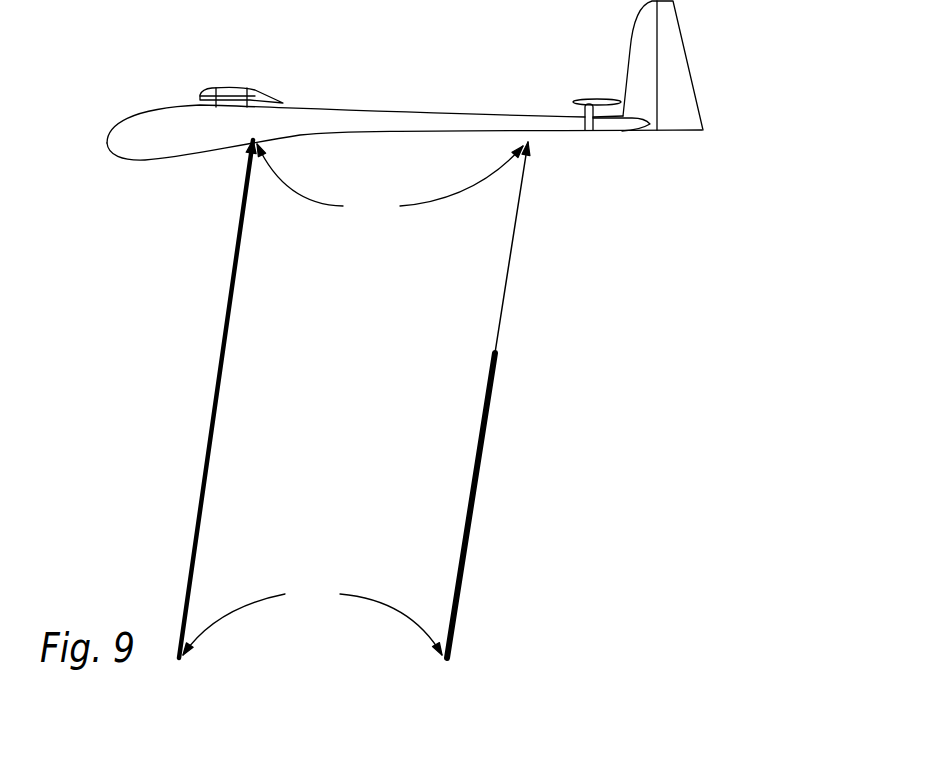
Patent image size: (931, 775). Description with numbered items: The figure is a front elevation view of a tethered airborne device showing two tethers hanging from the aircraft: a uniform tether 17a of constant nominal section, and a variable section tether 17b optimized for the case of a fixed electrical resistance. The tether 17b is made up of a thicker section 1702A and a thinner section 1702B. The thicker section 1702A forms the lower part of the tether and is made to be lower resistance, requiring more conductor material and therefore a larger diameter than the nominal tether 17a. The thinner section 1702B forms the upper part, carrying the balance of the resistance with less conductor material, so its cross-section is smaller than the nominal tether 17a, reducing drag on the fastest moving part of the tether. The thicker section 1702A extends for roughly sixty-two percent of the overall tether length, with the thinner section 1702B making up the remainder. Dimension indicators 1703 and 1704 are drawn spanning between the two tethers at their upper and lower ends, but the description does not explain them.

The uniform tether 17a is at (206, 420).
The tether 17b is at (543, 421).
The thicker section 1702A is at (482, 468).
The thinner section 1702B is at (510, 255).
The upper separation distance 1703 is at (390, 180).
The lower separation distance 1704 is at (312, 618).